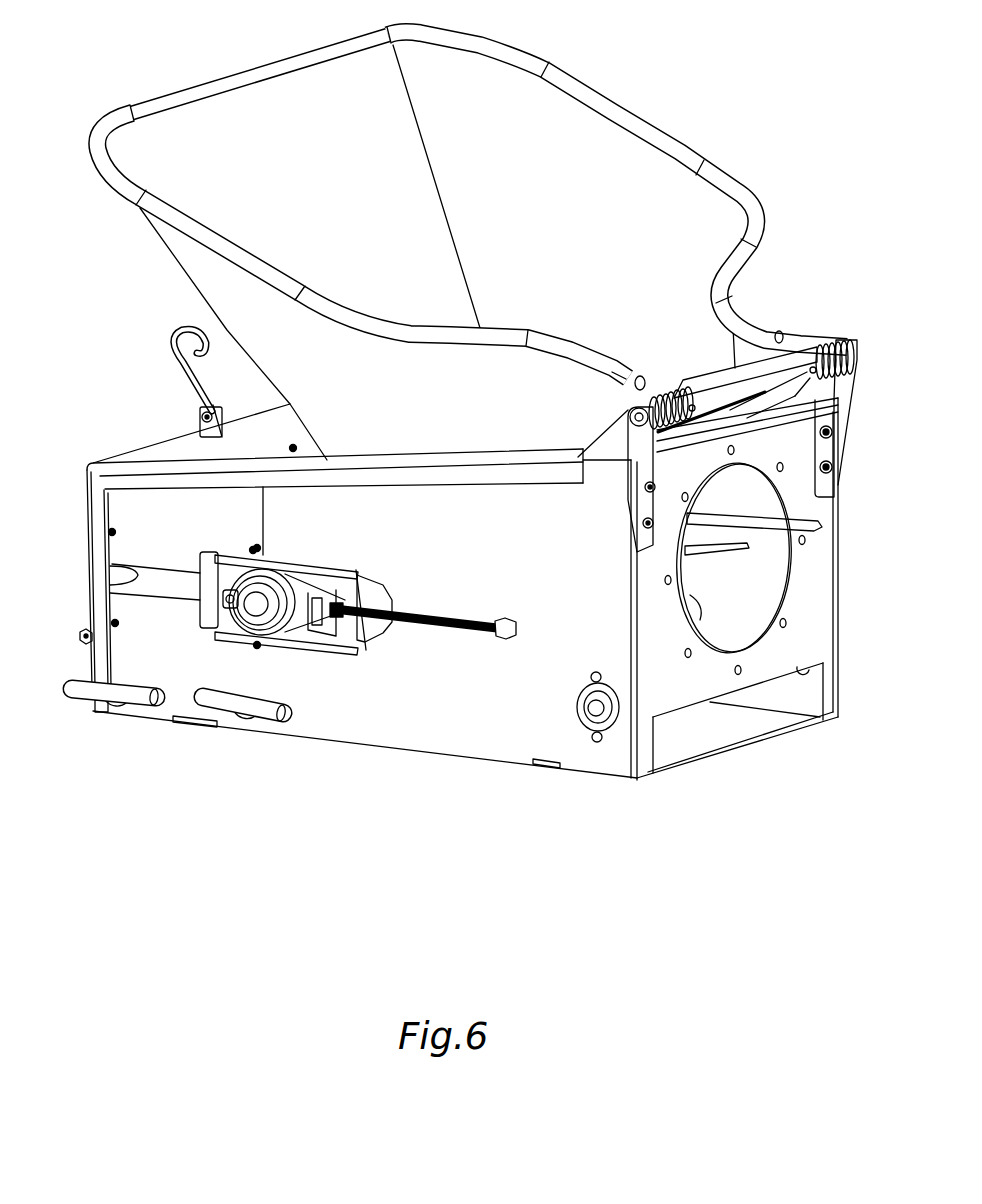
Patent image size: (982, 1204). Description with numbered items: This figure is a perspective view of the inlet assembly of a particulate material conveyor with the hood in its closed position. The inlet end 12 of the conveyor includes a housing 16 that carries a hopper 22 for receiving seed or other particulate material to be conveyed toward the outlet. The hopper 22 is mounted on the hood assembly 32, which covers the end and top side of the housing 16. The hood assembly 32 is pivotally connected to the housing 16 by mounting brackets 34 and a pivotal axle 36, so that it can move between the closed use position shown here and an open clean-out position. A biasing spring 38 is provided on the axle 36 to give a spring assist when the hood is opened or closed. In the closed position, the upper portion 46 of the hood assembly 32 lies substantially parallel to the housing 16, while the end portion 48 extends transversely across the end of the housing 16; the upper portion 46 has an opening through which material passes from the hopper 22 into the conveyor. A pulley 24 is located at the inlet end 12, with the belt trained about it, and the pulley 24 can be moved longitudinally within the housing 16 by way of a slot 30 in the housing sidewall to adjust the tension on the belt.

The inlet end 12 is at (333, 728).
The housing 16 is at (453, 743).
The hopper 22 is at (243, 127).
The pulley 24 is at (252, 610).
The slot 30 is at (112, 584).
The hood assembly 32 is at (167, 450).
The mounting bracket 34 is at (638, 440).
The pivotal axle 36 is at (727, 382).
The biasing spring 38 is at (828, 342).
The upper portion 46 is at (275, 425).
The end portion 48 is at (87, 513).